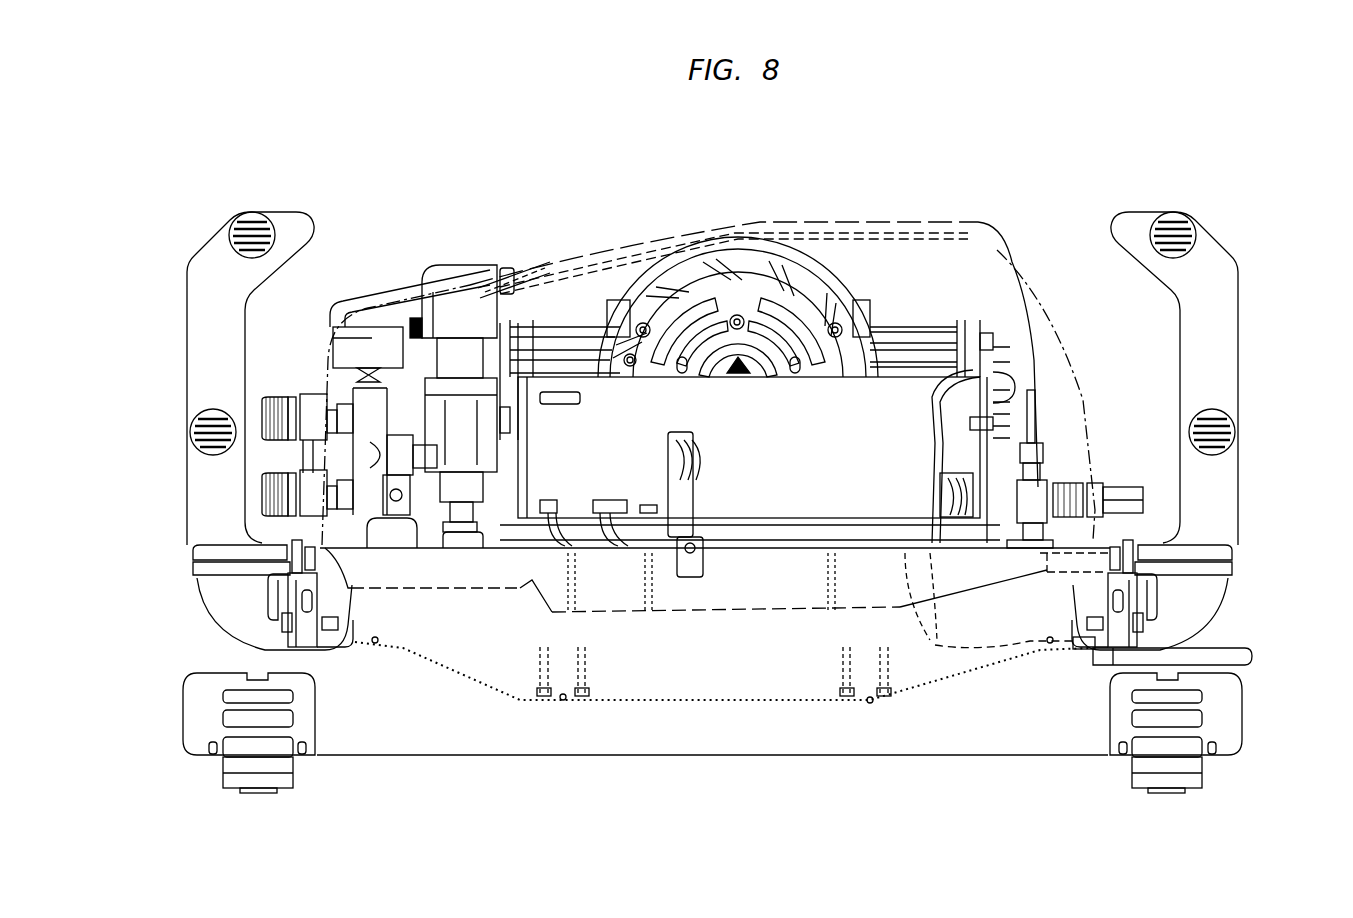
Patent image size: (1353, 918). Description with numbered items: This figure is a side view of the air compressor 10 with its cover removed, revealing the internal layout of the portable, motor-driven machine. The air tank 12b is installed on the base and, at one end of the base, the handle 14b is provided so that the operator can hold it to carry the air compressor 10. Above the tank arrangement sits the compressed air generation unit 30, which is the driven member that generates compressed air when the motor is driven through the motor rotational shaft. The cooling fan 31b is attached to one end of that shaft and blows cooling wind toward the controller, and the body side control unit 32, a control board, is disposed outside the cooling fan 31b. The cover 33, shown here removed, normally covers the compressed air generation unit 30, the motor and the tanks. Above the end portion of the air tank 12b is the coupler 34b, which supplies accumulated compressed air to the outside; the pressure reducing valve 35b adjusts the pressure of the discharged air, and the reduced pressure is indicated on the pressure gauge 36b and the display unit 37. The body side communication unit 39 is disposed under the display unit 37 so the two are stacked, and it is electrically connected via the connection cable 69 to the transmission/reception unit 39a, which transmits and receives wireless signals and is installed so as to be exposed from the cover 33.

The air compressor 10 is at (747, 210).
The air tank 12b is at (736, 760).
The handle 14b is at (200, 327).
The compressed air generation unit 30 is at (808, 268).
The cooling fan 31b is at (660, 250).
The body side control unit 32 is at (902, 387).
The cover 33 is at (855, 236).
The coupler 34b is at (263, 473).
The pressure reducing valve 35b is at (456, 263).
The pressure gauge 36b is at (347, 357).
The display unit 37 is at (380, 305).
The body side communication unit 39 is at (413, 327).
The transmission/reception unit 39a is at (503, 265).
The connection cable 69 is at (508, 265).